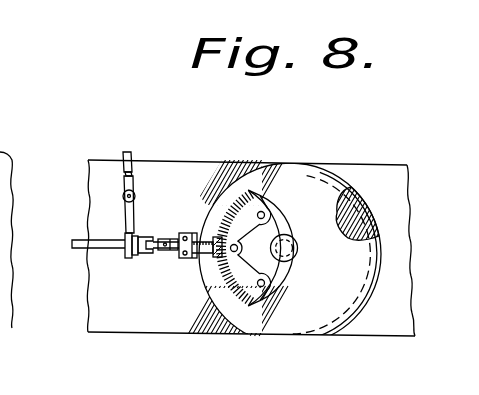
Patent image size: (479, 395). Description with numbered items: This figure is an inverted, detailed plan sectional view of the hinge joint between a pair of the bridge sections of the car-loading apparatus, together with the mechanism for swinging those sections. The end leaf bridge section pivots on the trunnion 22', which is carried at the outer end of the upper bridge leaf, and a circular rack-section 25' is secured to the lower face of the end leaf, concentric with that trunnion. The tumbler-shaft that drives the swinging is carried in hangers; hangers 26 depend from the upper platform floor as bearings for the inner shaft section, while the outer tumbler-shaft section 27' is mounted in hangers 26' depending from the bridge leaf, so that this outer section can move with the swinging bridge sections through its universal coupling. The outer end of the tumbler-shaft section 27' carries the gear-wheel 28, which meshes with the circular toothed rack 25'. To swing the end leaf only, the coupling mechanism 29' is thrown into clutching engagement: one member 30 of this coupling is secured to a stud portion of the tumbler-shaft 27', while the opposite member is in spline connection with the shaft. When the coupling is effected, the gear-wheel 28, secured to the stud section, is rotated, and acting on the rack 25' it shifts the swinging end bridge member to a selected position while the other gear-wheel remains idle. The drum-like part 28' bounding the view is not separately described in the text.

The trunnion 22' is at (298, 233).
The circular rack-section 25' is at (233, 242).
The hangers 26 is at (235, 248).
The hangers 26' is at (170, 226).
The outer tumbler-shaft section 27' is at (89, 259).
The gear-wheel 28 is at (198, 271).
The drum 28' is at (323, 254).
The coupling mechanism 29' is at (140, 261).
The coupling member 30 is at (160, 240).